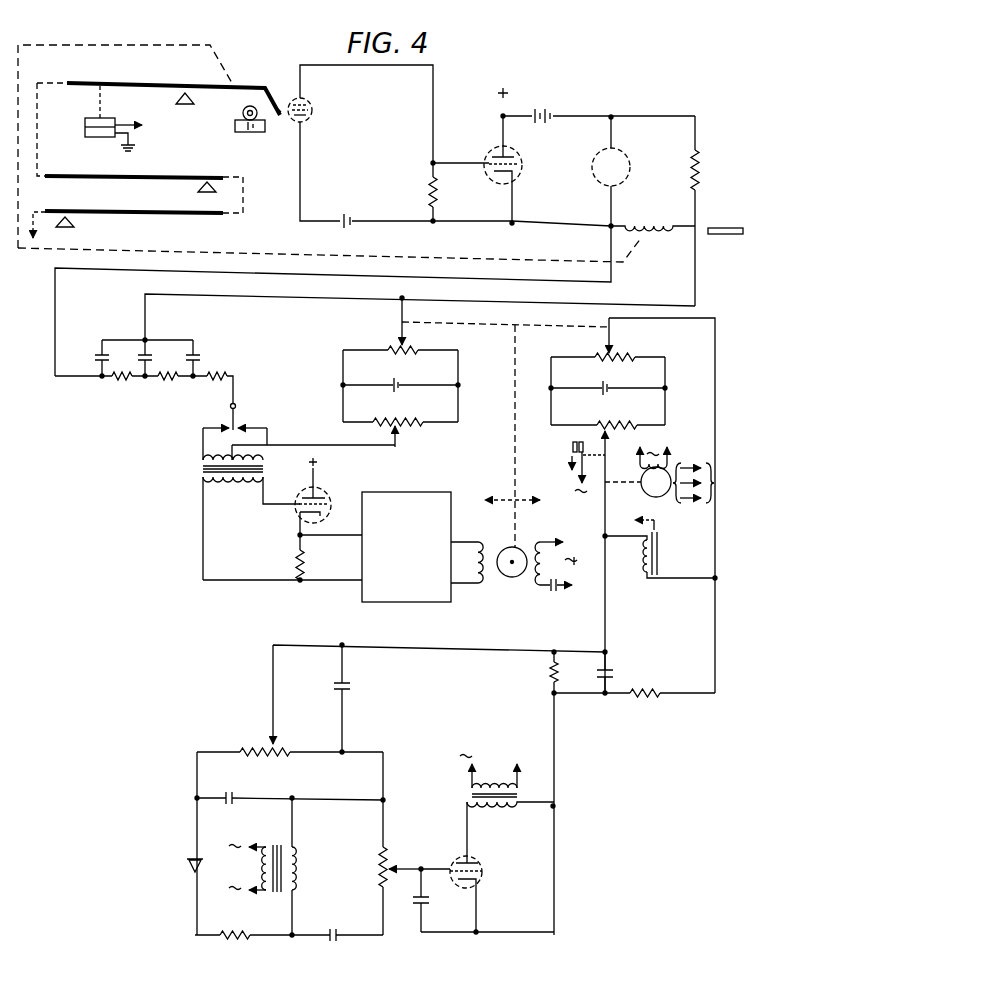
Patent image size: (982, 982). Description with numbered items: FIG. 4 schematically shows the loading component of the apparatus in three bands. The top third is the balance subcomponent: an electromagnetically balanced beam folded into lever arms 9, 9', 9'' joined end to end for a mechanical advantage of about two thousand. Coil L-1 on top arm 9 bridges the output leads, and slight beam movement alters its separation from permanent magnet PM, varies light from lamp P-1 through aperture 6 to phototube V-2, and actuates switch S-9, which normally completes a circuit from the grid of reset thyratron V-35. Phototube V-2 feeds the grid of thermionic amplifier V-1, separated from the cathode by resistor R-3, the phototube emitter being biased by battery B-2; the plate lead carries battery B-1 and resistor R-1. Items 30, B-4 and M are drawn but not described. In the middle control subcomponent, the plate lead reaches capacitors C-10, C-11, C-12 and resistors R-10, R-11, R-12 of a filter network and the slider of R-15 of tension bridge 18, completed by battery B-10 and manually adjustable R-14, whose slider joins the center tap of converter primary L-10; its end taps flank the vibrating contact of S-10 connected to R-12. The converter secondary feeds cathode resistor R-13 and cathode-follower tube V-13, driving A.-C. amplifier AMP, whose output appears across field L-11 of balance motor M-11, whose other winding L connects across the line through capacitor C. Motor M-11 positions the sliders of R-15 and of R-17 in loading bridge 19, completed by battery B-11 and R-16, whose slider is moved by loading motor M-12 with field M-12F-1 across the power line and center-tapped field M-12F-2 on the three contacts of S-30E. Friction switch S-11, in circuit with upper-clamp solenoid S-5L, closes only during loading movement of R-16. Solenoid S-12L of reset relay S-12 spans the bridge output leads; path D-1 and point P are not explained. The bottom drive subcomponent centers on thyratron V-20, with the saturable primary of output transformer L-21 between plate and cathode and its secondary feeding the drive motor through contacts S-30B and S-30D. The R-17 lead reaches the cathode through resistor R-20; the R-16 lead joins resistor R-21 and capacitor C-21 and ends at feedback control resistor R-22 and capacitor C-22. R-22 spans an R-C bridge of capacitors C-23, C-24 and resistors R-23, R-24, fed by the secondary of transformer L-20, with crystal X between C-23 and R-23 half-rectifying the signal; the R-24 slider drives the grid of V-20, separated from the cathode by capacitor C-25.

The top lever arm 9 is at (173, 89).
The lever arm 9' is at (134, 188).
The lever arm 9'' is at (134, 224).
The control linkage 30 is at (43, 229).
The aperture 6 is at (277, 106).
The switch S-9 is at (85, 128).
The reset thyratron V-35 is at (179, 131).
The lamp P-1 is at (251, 106).
The battery B-4 is at (250, 136).
The phototube V-2 is at (314, 110).
The resistor R-3 is at (444, 192).
The battery B-2 is at (342, 231).
The thermionic amplifier V-1 is at (521, 168).
The battery B-1 is at (553, 113).
The motor M is at (611, 171).
The resistor R-1 is at (700, 163).
The coil L-1 is at (653, 220).
The permanent magnet PM is at (739, 233).
The capacitor C-10 is at (93, 345).
The capacitor C-11 is at (138, 345).
The capacitor C-12 is at (201, 345).
The resistor R-10 is at (121, 381).
The resistor R-11 is at (167, 381).
The resistor R-12 is at (214, 381).
The vibrating contact switch S-10 is at (237, 403).
The converter inductor L-10 is at (233, 517).
The cathode follower tube V-13 is at (296, 514).
The cathode resistor R-13 is at (286, 557).
The A.-C. amplifier AMP is at (406, 547).
The field winding L-11 is at (467, 562).
The balance motor M-11 is at (514, 572).
The direction D-1 is at (486, 502).
The point P is at (534, 502).
The winding L is at (556, 563).
The capacitor C is at (556, 593).
The resistor R-15 is at (387, 348).
The battery B-10 is at (392, 383).
The resistor R-14 is at (389, 420).
The tension bridge 18 is at (448, 370).
The loading bridge 19 is at (576, 378).
The resistor R-17 is at (625, 349).
The battery B-11 is at (610, 386).
The resistor R-16 is at (612, 420).
The friction switch S-11 is at (573, 447).
The upper clamp solenoid S-5L is at (564, 472).
The loading motor M-12 is at (647, 494).
The field winding M-12F-1 is at (676, 449).
The center-tapped field winding M-12F-2 is at (687, 494).
The switch contacts S-30E is at (730, 483).
The reset relay S-12 is at (630, 524).
The reset relay solenoid S-12L is at (660, 555).
The capacitor C-22 is at (346, 686).
The feedback control resistor R-22 is at (248, 750).
The capacitor C-23 is at (238, 796).
The crystal X is at (188, 868).
The transformer L-20 is at (290, 865).
The resistor R-23 is at (235, 940).
The capacitor C-24 is at (337, 942).
The resistor R-24 is at (386, 852).
The capacitor C-25 is at (413, 905).
The drive thyratron V-20 is at (483, 874).
The output transformer L-21 is at (510, 796).
The switch contacts S-30D is at (500, 759).
The switch contacts S-30B is at (521, 767).
The resistor R-21 is at (546, 686).
The capacitor C-21 is at (614, 676).
The resistor R-20 is at (646, 700).